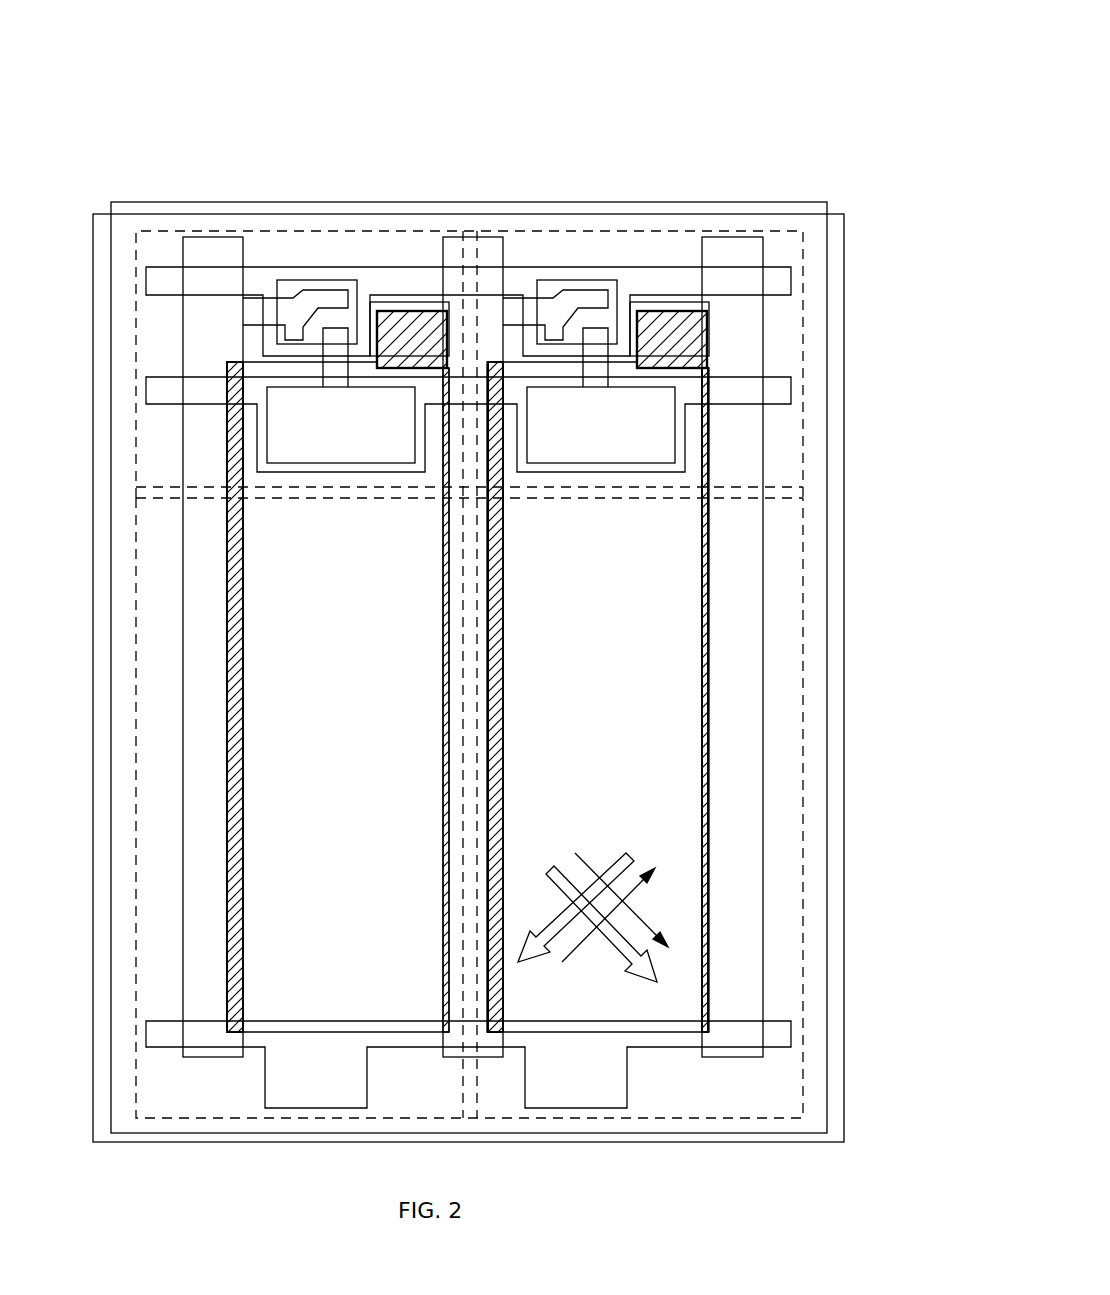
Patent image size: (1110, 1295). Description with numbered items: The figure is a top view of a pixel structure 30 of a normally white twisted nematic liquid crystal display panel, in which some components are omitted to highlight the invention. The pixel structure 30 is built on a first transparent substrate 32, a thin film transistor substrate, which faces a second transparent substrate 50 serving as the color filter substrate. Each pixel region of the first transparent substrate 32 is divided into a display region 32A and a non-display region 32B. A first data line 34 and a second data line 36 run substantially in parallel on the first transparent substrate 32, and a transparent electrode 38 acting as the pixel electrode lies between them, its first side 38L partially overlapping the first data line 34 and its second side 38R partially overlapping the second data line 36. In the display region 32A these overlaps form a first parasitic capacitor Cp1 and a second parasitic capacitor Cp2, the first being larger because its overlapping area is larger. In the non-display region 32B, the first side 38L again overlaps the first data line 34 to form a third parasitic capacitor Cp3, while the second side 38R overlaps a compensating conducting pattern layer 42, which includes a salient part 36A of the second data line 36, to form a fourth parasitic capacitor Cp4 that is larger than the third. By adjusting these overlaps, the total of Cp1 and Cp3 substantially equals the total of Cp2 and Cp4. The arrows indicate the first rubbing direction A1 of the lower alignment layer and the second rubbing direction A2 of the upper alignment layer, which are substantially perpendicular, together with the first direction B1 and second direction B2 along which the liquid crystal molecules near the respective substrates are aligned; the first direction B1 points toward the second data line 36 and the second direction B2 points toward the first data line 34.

The pixel structure 30 is at (760, 98).
The first transparent substrate 32 is at (768, 202).
The display region 32A is at (567, 232).
The non-display region 32B is at (805, 748).
The first data line 34 is at (470, 900).
The second data line 36 is at (737, 578).
The salient part 36A is at (682, 350).
The transparent electrode 38 is at (350, 977).
The first side 38L is at (507, 709).
The second side 38R is at (700, 749).
The compensating conducting pattern layer 42 is at (660, 310).
The second transparent substrate 50 is at (845, 230).
The first parasitic capacitor Cp1 is at (505, 545).
The second parasitic capacitor Cp2 is at (702, 593).
The third parasitic capacitor Cp3 is at (493, 450).
The fourth parasitic capacitor Cp4 is at (708, 333).
The first rubbing direction A1 is at (643, 910).
The second rubbing direction A2 is at (647, 868).
The first direction B1 is at (633, 975).
The second direction B2 is at (547, 957).